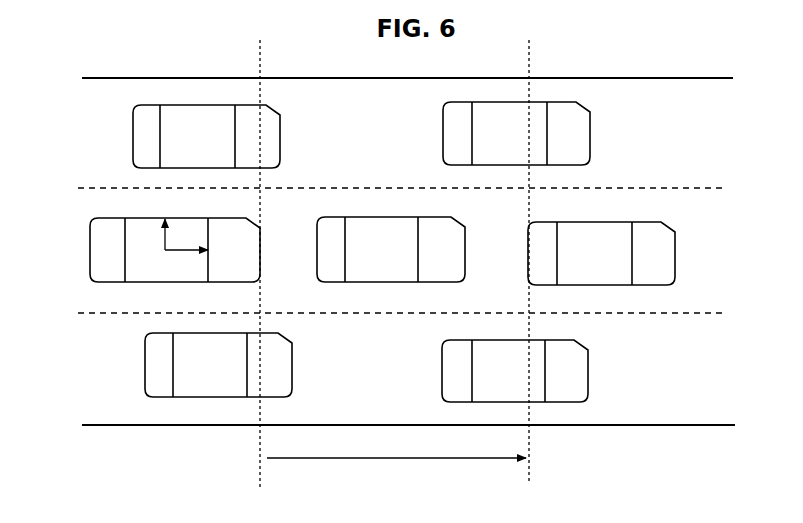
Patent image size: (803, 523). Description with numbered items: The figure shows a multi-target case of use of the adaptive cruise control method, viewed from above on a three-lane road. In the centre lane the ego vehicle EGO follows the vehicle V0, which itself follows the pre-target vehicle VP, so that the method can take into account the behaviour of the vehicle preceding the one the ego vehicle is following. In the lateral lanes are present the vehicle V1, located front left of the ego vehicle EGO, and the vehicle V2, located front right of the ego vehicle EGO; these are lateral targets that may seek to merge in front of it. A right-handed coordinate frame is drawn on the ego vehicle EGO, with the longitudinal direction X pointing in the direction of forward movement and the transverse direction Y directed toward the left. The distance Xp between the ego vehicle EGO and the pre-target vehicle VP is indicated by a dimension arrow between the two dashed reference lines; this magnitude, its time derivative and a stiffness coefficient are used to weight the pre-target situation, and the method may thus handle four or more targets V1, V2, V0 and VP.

The lateral target vehicle V1 is at (206, 136).
The lateral target vehicle V2 is at (218, 365).
The vehicle followed by the ego vehicle V0 is at (391, 249).
The pre-target vehicle VP is at (601, 253).
The ego vehicle EGO is at (89, 266).
The longitudinal direction X is at (186, 262).
The transverse direction Y is at (172, 231).
The distance between the ego vehicle and the pre-target vehicle Xp is at (418, 461).